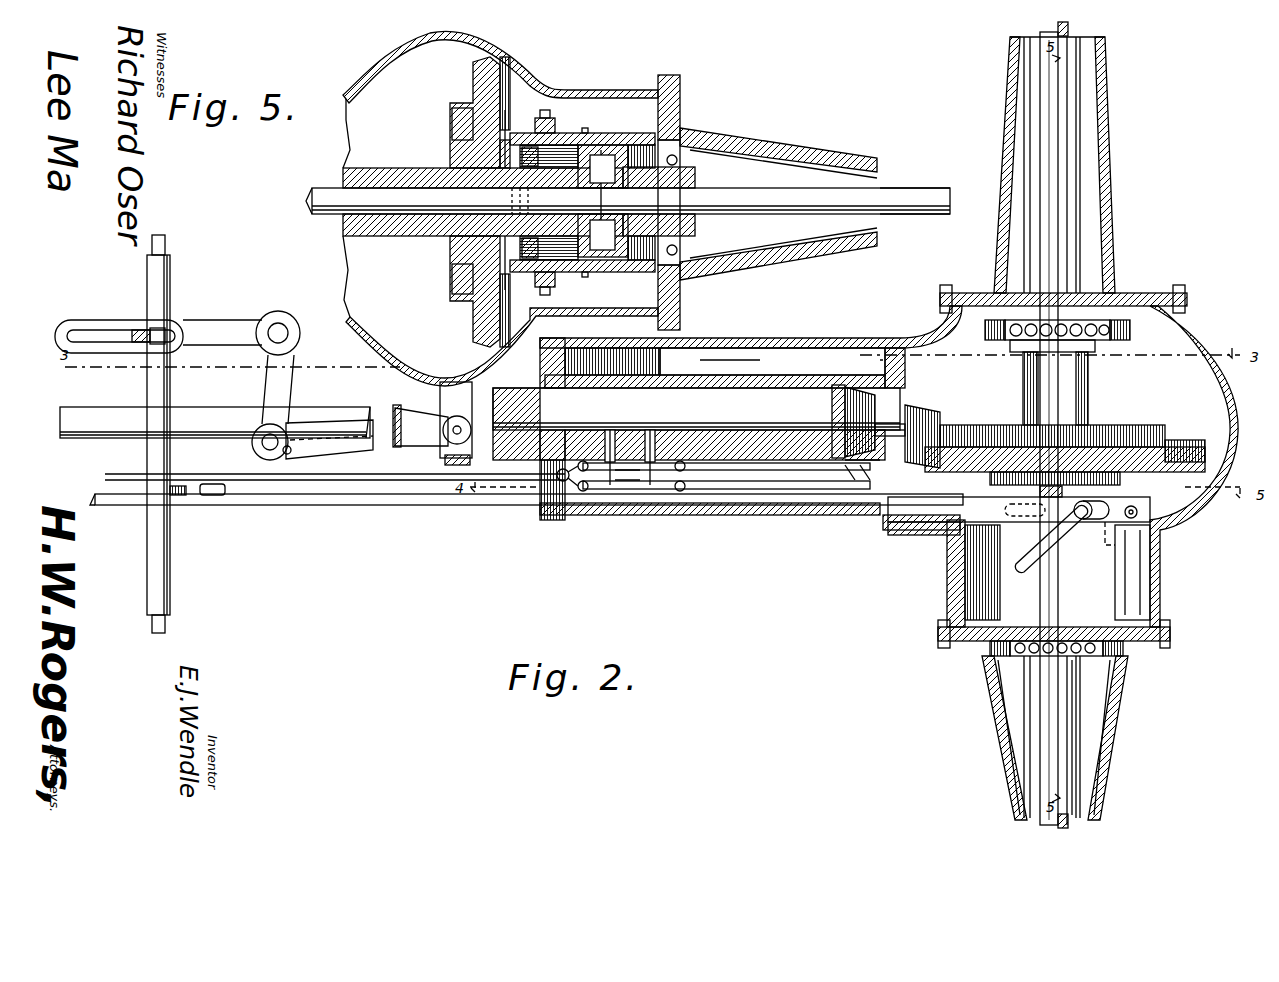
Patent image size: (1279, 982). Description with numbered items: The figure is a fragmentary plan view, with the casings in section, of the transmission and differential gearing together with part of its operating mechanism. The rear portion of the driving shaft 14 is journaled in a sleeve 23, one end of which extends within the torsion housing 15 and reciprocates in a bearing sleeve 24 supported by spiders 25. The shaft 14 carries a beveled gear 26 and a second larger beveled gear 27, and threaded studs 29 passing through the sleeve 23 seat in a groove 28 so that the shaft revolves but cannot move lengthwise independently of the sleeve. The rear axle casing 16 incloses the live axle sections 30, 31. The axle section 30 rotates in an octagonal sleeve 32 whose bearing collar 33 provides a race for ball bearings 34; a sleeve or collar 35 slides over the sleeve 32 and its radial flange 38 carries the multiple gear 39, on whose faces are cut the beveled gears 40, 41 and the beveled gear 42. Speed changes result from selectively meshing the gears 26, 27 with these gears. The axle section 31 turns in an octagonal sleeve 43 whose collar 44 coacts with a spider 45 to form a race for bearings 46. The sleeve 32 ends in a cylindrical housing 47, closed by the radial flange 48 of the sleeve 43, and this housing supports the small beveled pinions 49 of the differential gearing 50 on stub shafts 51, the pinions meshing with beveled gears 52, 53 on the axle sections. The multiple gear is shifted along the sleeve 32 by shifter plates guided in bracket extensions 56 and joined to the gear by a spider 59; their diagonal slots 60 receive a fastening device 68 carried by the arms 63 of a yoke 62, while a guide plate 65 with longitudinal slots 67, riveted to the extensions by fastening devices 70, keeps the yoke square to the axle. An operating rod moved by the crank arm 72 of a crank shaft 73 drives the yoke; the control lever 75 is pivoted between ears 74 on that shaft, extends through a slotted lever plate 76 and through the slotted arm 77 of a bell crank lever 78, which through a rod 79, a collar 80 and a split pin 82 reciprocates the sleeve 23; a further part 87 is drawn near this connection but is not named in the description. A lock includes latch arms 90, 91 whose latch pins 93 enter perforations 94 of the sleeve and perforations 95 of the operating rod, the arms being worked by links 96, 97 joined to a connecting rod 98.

In FIG. 2, the shaft 14 is at (696, 424).
In FIG. 2, the torsion housing 15 is at (852, 345).
In FIG. 2, the rear axle casing 16 is at (1205, 358).
In FIG. 2, the sleeve 23 is at (668, 383).
In FIG. 2, the bearing sleeve 24 is at (770, 388).
In FIG. 2, the spiders 25 is at (975, 373).
In FIG. 2, the beveled gear 26 is at (940, 422).
In FIG. 2, the second larger beveled gear 27 is at (852, 468).
In FIG. 2, the circumferentially formed groove 28 is at (832, 420).
In FIG. 2, the threaded studs 29 is at (838, 388).
In FIG. 5, the live axle section 30 is at (340, 215).
In FIG. 2, the live axle section 30 is at (1060, 225).
In FIG. 5, the live axle section 31 is at (928, 196).
In FIG. 2, the live axle section 31 is at (1045, 680).
In FIG. 5, the sleeve 32 is at (483, 192).
In FIG. 2, the sleeve 32 is at (1089, 370).
In FIG. 2, the bearing collar 33 is at (1062, 340).
In FIG. 2, the ball bearings 34 is at (1022, 352).
In FIG. 5, the sleeve or collar 35 is at (549, 250).
In FIG. 5, the radial flange 38 is at (505, 160).
In FIG. 2, the radial flange 38 is at (1120, 480).
In FIG. 5, the multiple gear 39 is at (455, 270).
In FIG. 2, the multiple gear 39 is at (1090, 427).
In FIG. 5, the beveled gear 40 is at (470, 82).
In FIG. 2, the beveled gear 40 is at (1166, 441).
In FIG. 5, the beveled gear 41 is at (448, 118).
In FIG. 2, the beveled gear 41 is at (1142, 428).
In FIG. 5, the beveled gear 42 is at (500, 75).
In FIG. 5, the octagonal sleeve 43 is at (696, 228).
In FIG. 2, the octagonal sleeve 43 is at (1076, 646).
In FIG. 5, the collar 44 is at (696, 172).
In FIG. 2, the collar 44 is at (1040, 644).
In FIG. 5, the spider 45 is at (692, 141).
In FIG. 2, the spider 45 is at (998, 646).
In FIG. 2, the bearings 46 is at (1064, 688).
In FIG. 5, the cylindrical housing 47 is at (590, 142).
In FIG. 5, the radial flange 48 is at (678, 296).
In FIG. 5, the small beveled pinions 49 is at (582, 189).
In FIG. 5, the differential gearing 50 is at (612, 176).
In FIG. 5, the stub shafts 51 is at (600, 150).
In FIG. 5, the beveled gear 52 is at (538, 200).
In FIG. 5, the beveled gear 53 is at (592, 268).
In FIG. 2, the inwardly directed extensions 56 is at (968, 577).
In FIG. 5, the spider 59 is at (482, 300).
In FIG. 5, the diagonal slots 60 is at (585, 133).
In FIG. 2, the diagonal slots 60 is at (1030, 566).
In FIG. 2, the yoke 62 is at (948, 520).
In FIG. 2, the arms 63 is at (1033, 498).
In FIG. 2, the plate 65 is at (1106, 530).
In FIG. 2, the longitudinal slots 67 is at (1108, 512).
In FIG. 2, the fastening device 68 is at (1083, 520).
In FIG. 2, the rivets or fastening devices 70 is at (1137, 516).
In FIG. 2, the crank arm 72 is at (186, 488).
In FIG. 2, the crank shaft 73 is at (168, 560).
In FIG. 2, the ears 74 is at (226, 400).
In FIG. 2, the control lever 75 is at (134, 341).
In FIG. 5, the slotted lever plate 76 is at (680, 250).
In FIG. 2, the slotted arm 77 is at (440, 508).
In FIG. 2, the bell crank lever 78 is at (235, 318).
In FIG. 2, the rod 79 is at (325, 434).
In FIG. 2, the collar 80 is at (445, 460).
In FIG. 2, the split pin 82 is at (452, 416).
In FIG. 2, the pivot 87 is at (446, 423).
In FIG. 2, the latch arm 90 is at (662, 455).
In FIG. 2, the latch arm 91 is at (683, 473).
In FIG. 2, the latch pins 93 is at (610, 462).
In FIG. 2, the perforations 94 is at (612, 445).
In FIG. 2, the perforations 95 is at (660, 492).
In FIG. 2, the link 96 is at (558, 467).
In FIG. 2, the link 97 is at (560, 505).
In FIG. 2, the connecting rod 98 is at (510, 481).